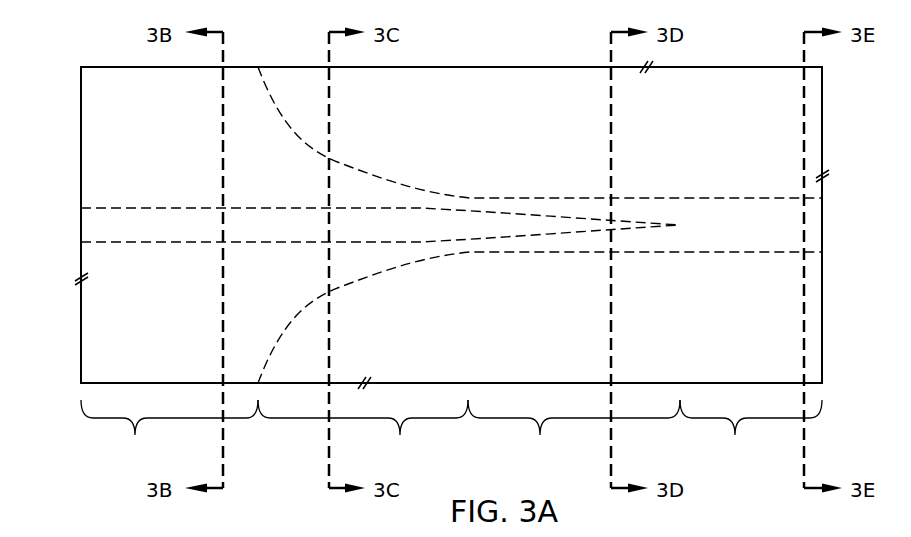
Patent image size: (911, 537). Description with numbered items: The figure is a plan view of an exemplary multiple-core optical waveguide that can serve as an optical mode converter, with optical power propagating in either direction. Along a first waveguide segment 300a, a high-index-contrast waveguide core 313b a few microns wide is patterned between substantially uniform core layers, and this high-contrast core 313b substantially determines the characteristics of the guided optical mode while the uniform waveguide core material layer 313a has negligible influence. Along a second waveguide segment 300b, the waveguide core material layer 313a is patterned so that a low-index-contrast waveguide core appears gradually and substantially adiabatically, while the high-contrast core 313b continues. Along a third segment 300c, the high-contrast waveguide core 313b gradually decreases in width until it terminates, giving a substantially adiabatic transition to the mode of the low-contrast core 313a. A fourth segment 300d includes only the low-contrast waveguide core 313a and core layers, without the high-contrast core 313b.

The waveguide core material layer 313a is at (725, 207).
The high-index-contrast waveguide core 313b is at (148, 214).
The first waveguide segment 300a is at (169, 435).
The second waveguide segment 300b is at (363, 435).
The third waveguide segment 300c is at (574, 435).
The fourth waveguide segment 300d is at (751, 435).